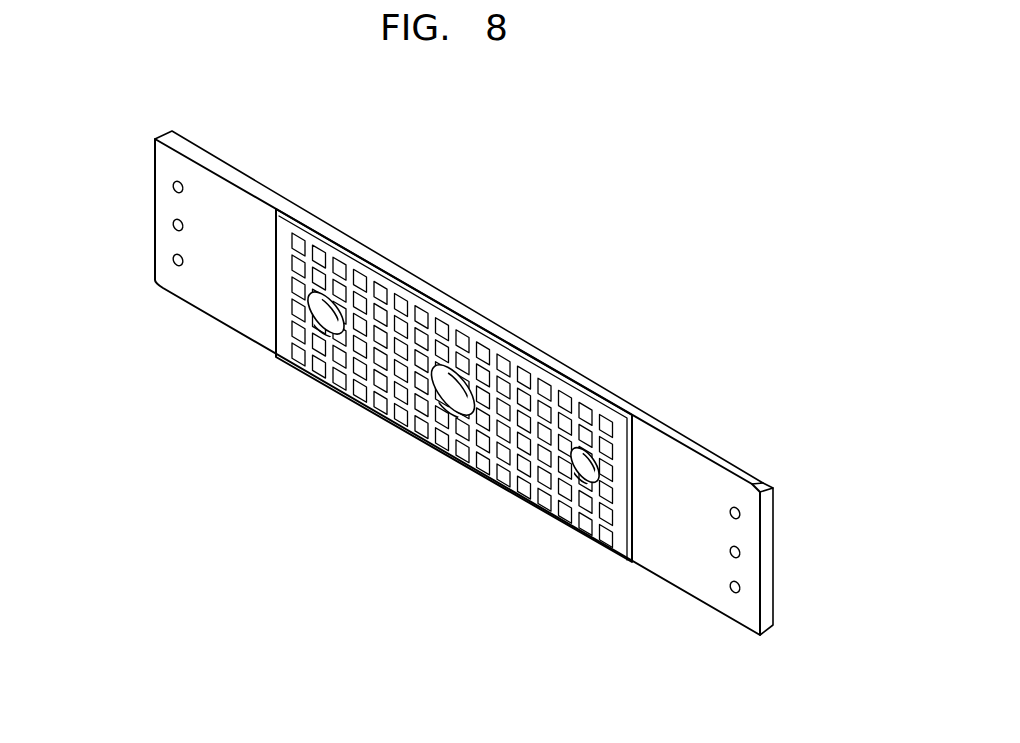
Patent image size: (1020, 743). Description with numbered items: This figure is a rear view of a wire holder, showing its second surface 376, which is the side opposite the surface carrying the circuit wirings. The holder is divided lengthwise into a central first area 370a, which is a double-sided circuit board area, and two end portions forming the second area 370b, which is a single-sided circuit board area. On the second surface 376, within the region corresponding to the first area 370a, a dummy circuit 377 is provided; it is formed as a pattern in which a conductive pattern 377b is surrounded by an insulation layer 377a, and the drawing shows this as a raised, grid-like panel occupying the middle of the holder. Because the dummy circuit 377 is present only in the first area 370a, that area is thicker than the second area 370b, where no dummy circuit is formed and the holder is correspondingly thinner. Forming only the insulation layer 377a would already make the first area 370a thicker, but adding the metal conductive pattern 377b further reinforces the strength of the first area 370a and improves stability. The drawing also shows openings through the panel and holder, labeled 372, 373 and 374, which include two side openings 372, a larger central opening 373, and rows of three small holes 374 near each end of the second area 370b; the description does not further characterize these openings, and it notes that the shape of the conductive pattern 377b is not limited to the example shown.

The first area 370a is at (675, 407).
The second area 370b is at (305, 192).
The side through holes 372 is at (332, 325).
The central through hole 373 is at (447, 405).
The fastening holes 374 is at (176, 190).
The second surface 376 is at (668, 572).
The dummy circuit 377 is at (454, 428).
The insulation layer 377a is at (568, 527).
The conductive pattern 377b is at (602, 538).